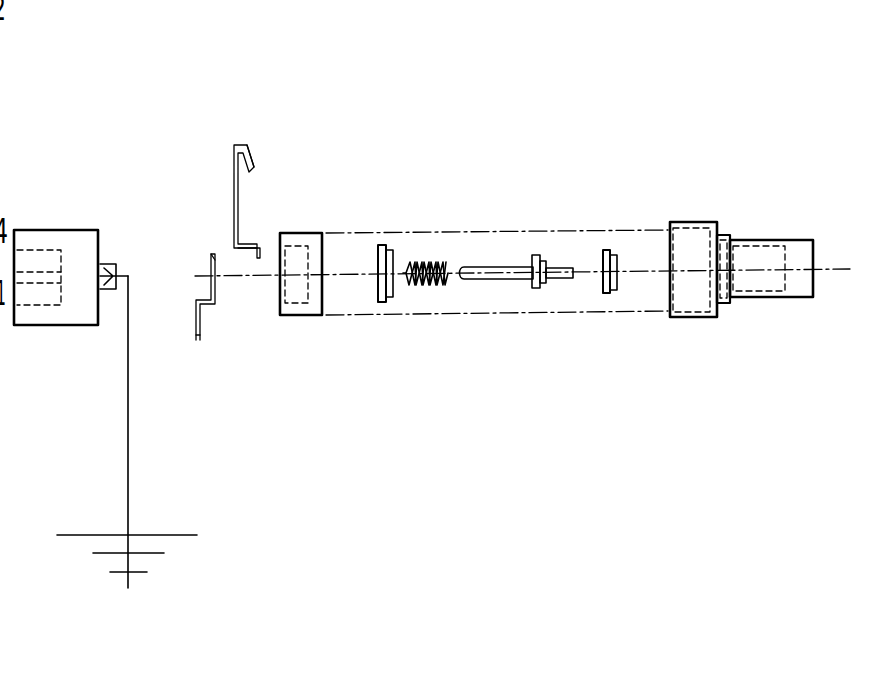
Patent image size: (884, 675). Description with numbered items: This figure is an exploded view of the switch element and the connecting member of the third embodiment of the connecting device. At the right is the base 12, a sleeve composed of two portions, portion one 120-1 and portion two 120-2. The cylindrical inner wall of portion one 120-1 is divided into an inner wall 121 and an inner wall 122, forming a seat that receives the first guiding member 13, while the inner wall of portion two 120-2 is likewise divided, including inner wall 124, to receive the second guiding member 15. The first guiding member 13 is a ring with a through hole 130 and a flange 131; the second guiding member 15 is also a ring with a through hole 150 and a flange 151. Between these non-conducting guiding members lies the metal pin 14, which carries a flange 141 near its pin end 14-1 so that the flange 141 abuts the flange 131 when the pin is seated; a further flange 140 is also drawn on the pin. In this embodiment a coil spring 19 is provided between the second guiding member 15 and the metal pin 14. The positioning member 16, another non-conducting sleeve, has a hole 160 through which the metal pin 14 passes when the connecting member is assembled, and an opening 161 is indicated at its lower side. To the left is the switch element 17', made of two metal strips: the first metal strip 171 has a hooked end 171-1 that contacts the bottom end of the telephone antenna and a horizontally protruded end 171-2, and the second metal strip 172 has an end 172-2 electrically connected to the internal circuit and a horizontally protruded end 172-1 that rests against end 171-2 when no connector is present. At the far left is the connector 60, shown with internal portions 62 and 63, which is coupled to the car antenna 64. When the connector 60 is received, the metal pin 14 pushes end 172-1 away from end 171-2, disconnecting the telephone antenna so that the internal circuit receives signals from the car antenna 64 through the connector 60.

The base 12 is at (771, 228).
The portion one 120-1 is at (783, 249).
The portion two 120-2 is at (714, 245).
The inner wall 121 is at (793, 285).
The inner wall 122 is at (775, 290).
The inner wall 124 is at (668, 301).
The first guiding member 13 is at (618, 244).
The through hole 130 is at (602, 282).
The flange 131 is at (604, 250).
The metal pin 14 is at (497, 255).
The pin end 14-1 is at (578, 280).
The flange 140 is at (504, 267).
The flange 141 is at (536, 287).
The second guiding member 15 is at (395, 239).
The through hole 150 is at (378, 282).
The flange 151 is at (388, 249).
The positioning member 16 is at (313, 222).
The hole 160 is at (313, 262).
The opening 161 is at (303, 297).
The switch element 17' is at (473, 312).
The first metal strip 171 is at (225, 176).
The hooked end 171-1 is at (246, 149).
The horizontally protruded end 171-2 is at (262, 250).
The second metal strip 172 is at (200, 290).
The horizontally protruded end 172-1 is at (211, 253).
The end 172-2 is at (196, 312).
The coil spring 19 is at (443, 248).
The connector 60 is at (61, 222).
The terminal 62 is at (45, 285).
The circuit 63 is at (34, 250).
The car antenna 64 is at (200, 559).